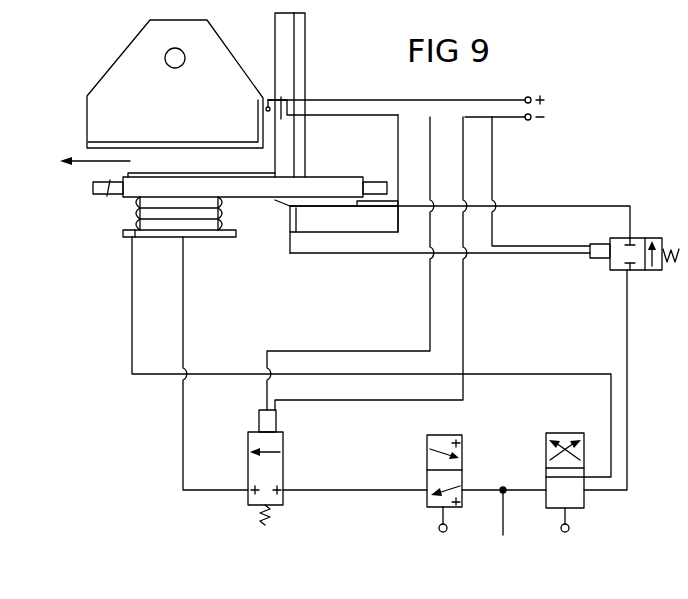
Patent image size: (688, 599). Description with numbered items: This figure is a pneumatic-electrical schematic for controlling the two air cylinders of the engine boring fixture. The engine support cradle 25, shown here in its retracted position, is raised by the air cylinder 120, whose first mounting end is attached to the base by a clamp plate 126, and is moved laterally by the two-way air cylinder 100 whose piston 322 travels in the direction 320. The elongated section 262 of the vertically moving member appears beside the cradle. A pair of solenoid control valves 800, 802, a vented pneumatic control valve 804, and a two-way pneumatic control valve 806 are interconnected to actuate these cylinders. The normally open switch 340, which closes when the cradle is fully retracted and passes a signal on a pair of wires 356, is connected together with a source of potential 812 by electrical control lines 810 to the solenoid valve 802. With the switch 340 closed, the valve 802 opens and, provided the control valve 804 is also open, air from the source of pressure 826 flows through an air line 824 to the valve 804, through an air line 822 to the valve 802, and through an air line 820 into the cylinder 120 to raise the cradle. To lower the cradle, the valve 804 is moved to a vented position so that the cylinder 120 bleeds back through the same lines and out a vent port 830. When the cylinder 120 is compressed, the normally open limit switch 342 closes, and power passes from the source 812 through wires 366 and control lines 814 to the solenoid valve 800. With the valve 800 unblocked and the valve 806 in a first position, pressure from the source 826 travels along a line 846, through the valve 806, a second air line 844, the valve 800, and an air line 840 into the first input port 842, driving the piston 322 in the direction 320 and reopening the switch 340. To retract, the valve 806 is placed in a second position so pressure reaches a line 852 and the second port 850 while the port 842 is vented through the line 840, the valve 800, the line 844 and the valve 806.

The engine support cradle 25 is at (126, 86).
The two-way air cylinder 100 is at (318, 188).
The air cylinder 120 is at (218, 213).
The clamp plate 126 is at (142, 236).
The elongated section 262 is at (290, 58).
The lateral direction 320 is at (130, 161).
The piston 322 is at (105, 195).
The normally open switch 340 is at (283, 97).
The normally open limit switch 342 is at (290, 225).
The pair of wires 356 is at (346, 99).
The wires 366 is at (312, 252).
The solenoid valve 800 is at (620, 262).
The solenoid valve 802 is at (278, 462).
The vented pneumatic control valve 804 is at (450, 447).
The two-way pneumatic control valve 806 is at (554, 442).
The electrical control lines 810 is at (422, 306).
The source of potential 812 is at (512, 97).
The control lines 814 is at (505, 262).
The air line 820 is at (180, 438).
The air line 822 is at (380, 490).
The air line 824 is at (478, 488).
The source of pressure 826 is at (506, 498).
The vent port 830 is at (462, 502).
The air line 840 is at (530, 206).
The first input port 842 is at (360, 206).
The second air line 844 is at (628, 320).
The line 846 is at (527, 487).
The second port 850 is at (133, 205).
The line 852 is at (130, 325).